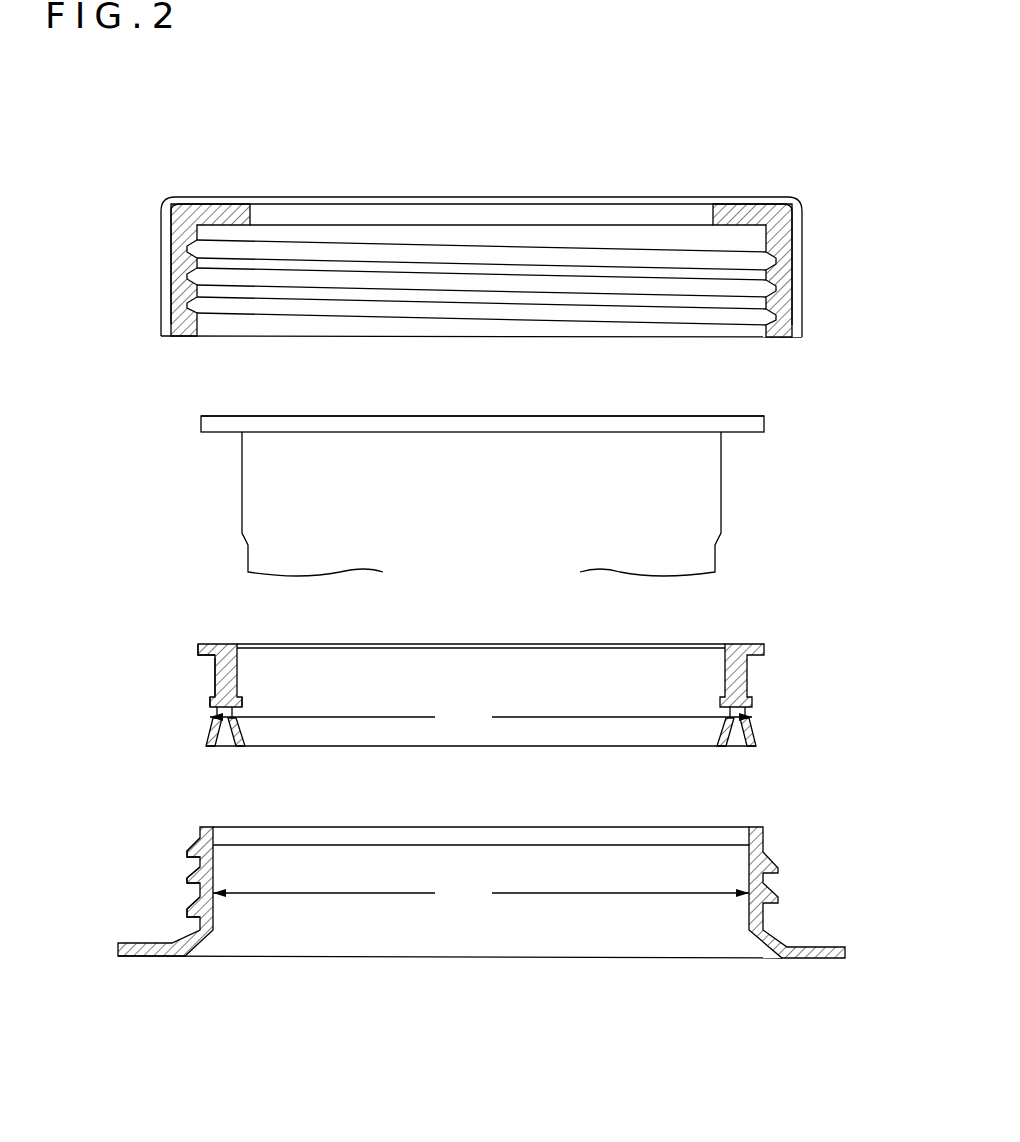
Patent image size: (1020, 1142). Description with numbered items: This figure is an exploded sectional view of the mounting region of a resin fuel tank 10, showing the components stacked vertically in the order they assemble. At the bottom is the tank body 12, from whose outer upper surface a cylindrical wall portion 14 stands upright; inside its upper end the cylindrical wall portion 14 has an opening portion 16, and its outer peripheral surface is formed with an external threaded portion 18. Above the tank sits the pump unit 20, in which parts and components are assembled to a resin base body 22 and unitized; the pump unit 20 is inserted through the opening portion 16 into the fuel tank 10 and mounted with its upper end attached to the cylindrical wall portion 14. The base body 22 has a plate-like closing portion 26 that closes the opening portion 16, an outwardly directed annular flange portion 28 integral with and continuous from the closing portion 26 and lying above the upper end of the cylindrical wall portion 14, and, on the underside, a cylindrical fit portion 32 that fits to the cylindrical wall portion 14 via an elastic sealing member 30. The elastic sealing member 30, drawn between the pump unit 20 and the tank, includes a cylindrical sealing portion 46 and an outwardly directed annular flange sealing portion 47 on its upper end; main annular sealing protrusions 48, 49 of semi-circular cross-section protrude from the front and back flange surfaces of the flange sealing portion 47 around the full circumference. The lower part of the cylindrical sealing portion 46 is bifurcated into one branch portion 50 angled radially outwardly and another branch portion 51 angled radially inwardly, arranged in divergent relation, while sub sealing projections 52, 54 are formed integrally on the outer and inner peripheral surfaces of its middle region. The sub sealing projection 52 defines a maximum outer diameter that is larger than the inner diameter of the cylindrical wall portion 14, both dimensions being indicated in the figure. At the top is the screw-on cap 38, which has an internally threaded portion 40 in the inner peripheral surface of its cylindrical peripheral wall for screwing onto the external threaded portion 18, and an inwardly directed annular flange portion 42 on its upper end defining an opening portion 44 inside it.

The resin fuel tank 10 is at (449, 851).
The tank body 12 is at (826, 946).
The cylindrical wall portion 14 is at (176, 910).
The opening portion 16 is at (216, 827).
The external threaded portion 18 is at (188, 878).
The pump unit 20 is at (456, 457).
The base body 22 is at (232, 457).
The closing portion 26 is at (472, 415).
The flange portion 28 is at (216, 415).
The elastic sealing member 30 is at (488, 635).
The fit portion 32 is at (710, 470).
The screw-on cap 38 is at (527, 206).
The internally threaded portion 40 is at (786, 263).
The flange portion 42 is at (733, 208).
The opening portion 44 is at (263, 197).
The cylindrical sealing portion 46 is at (748, 697).
The flange sealing portion 47 is at (225, 652).
The main annular sealing protrusion 48 is at (205, 645).
The main annular sealing protrusion 49 is at (214, 668).
The one branch portion 50 is at (212, 737).
The other branch portion 51 is at (242, 737).
The sub sealing projection 52 is at (216, 697).
The sub sealing projection 54 is at (244, 697).